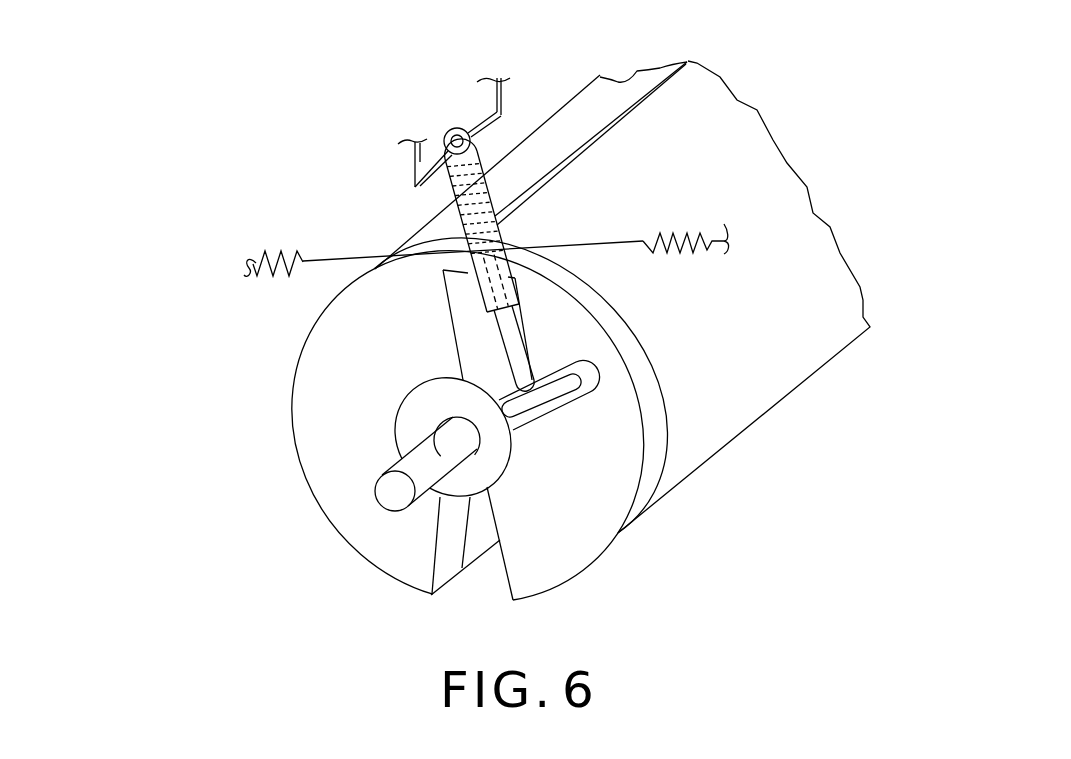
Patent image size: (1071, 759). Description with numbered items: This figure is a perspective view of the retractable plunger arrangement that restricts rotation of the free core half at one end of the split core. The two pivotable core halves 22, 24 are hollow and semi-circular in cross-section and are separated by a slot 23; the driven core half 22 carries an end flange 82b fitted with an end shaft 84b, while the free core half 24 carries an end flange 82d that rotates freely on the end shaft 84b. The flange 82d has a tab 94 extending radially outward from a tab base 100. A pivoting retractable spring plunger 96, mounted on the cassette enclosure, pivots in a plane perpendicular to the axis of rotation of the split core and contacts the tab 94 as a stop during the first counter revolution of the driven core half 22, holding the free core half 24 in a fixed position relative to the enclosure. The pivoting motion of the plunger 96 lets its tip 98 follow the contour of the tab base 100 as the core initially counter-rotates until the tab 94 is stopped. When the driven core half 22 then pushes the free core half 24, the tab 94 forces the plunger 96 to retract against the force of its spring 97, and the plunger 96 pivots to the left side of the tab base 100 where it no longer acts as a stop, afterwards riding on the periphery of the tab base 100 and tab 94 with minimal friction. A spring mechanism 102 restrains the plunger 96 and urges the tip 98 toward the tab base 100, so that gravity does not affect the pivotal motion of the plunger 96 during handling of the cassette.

The driven core half 22 is at (556, 114).
The free core half 24 is at (830, 362).
The spring 97 is at (443, 183).
The retractable spring plunger 96 is at (503, 237).
The tip 98 is at (527, 370).
The spring mechanism 102 is at (640, 258).
The end flange 82b is at (318, 378).
The end flange 82d is at (605, 516).
The tab base 100 is at (460, 372).
The end shaft 84b is at (397, 465).
The tab 94 is at (572, 394).
The slot 23 is at (483, 580).